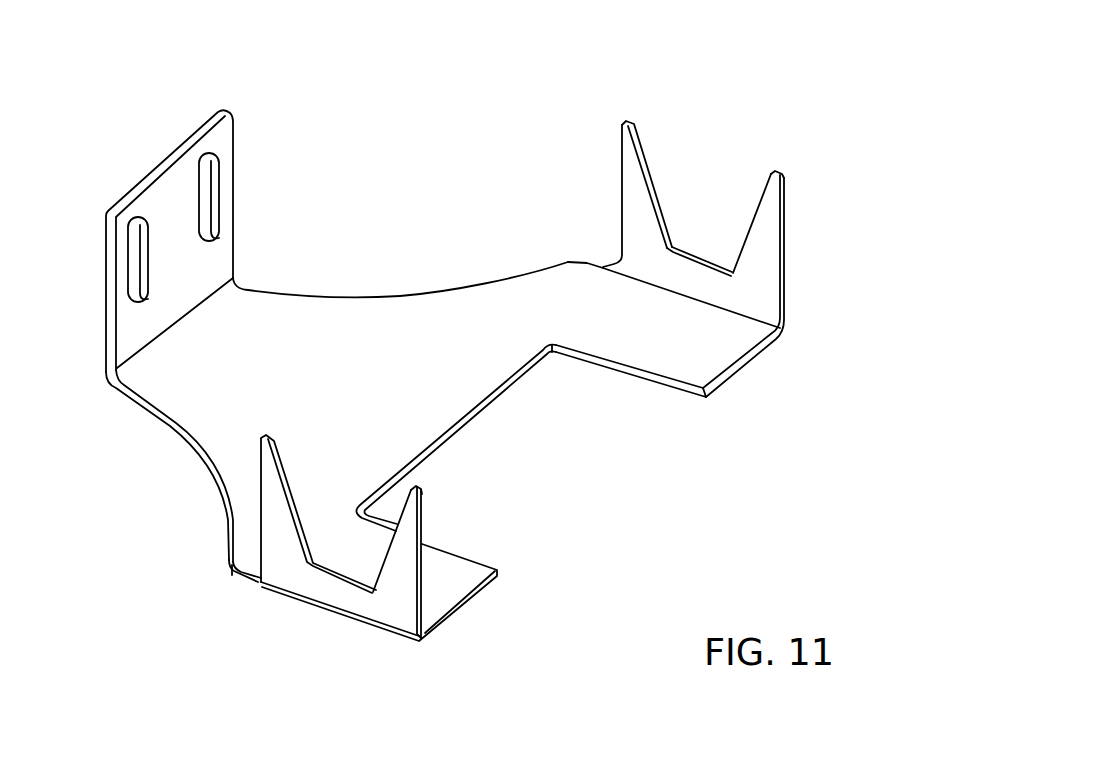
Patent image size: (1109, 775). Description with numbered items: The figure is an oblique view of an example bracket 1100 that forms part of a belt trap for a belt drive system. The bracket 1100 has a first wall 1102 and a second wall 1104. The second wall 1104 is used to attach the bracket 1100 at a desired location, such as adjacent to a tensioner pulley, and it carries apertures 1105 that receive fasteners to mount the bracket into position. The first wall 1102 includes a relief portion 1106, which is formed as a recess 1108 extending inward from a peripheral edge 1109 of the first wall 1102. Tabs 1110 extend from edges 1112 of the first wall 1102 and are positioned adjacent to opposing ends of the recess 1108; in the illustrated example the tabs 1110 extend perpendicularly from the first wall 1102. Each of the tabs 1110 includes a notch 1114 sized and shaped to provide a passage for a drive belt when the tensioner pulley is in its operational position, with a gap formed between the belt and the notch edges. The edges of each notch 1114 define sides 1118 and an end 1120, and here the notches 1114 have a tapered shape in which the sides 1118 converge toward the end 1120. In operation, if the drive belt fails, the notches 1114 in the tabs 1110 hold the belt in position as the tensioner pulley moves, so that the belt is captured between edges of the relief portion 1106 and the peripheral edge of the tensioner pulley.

The bracket 1100 is at (813, 50).
The first wall 1102 is at (172, 424).
The second wall 1104 is at (109, 280).
The apertures 1105 is at (130, 272).
The relief portion 1106 is at (467, 418).
The recess 1108 is at (524, 437).
The peripheral edge 1109 is at (473, 597).
The tabs 1110 is at (260, 493).
The edges 1112 is at (235, 575).
The notches 1114 is at (410, 524).
The sides 1118 is at (760, 233).
The end 1120 is at (700, 267).